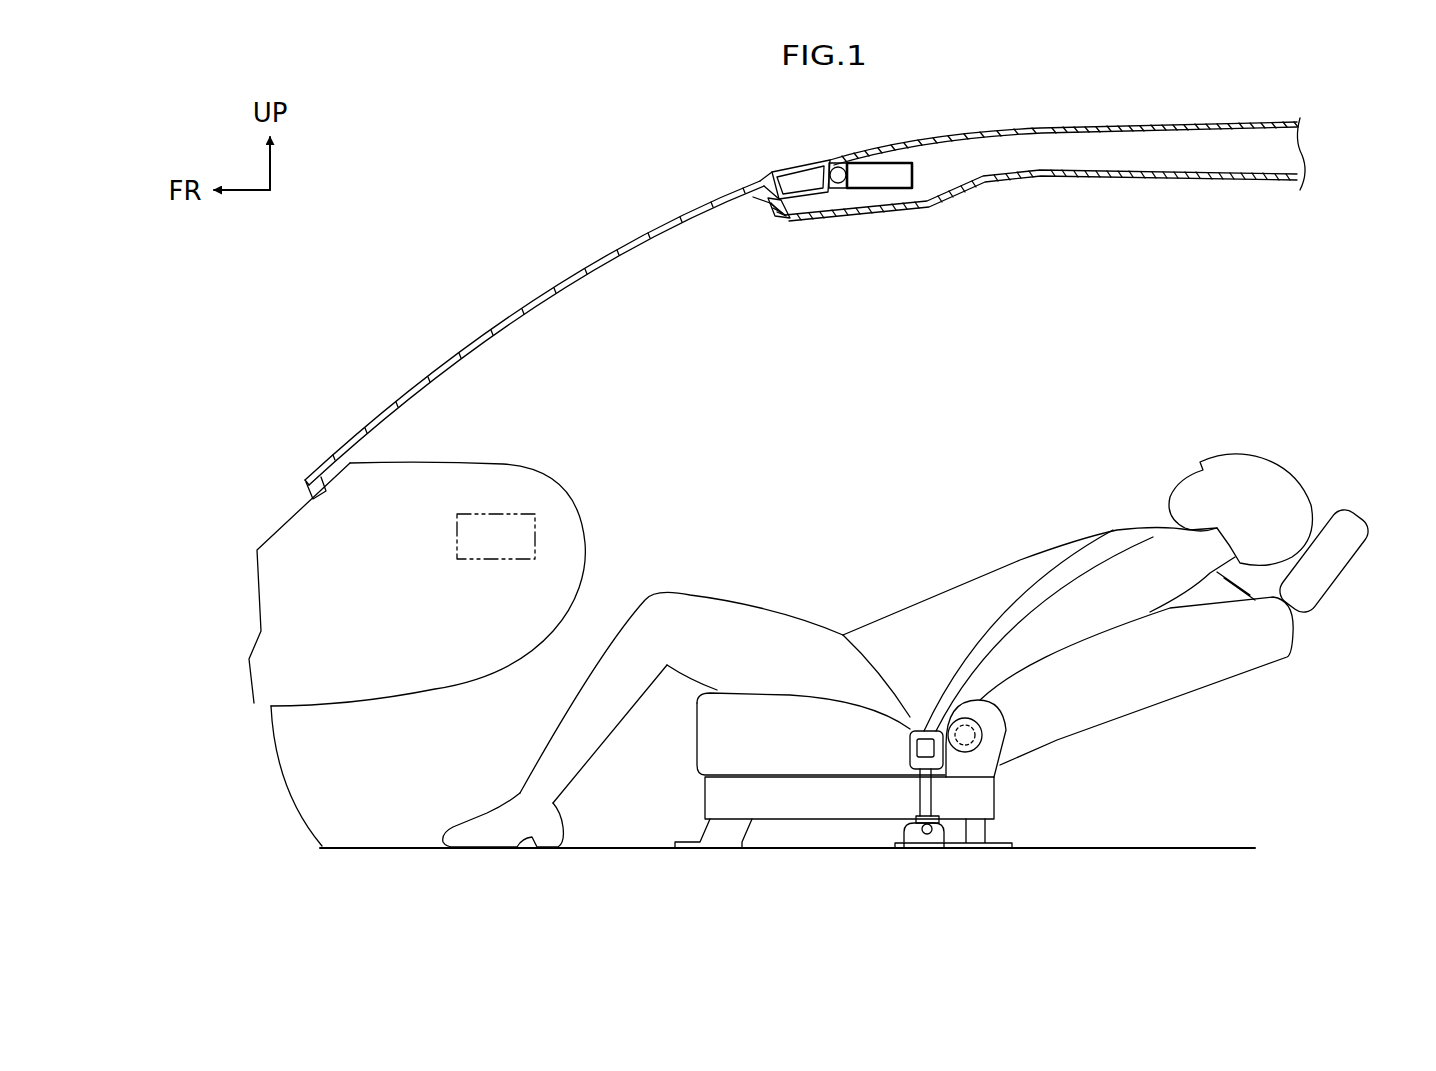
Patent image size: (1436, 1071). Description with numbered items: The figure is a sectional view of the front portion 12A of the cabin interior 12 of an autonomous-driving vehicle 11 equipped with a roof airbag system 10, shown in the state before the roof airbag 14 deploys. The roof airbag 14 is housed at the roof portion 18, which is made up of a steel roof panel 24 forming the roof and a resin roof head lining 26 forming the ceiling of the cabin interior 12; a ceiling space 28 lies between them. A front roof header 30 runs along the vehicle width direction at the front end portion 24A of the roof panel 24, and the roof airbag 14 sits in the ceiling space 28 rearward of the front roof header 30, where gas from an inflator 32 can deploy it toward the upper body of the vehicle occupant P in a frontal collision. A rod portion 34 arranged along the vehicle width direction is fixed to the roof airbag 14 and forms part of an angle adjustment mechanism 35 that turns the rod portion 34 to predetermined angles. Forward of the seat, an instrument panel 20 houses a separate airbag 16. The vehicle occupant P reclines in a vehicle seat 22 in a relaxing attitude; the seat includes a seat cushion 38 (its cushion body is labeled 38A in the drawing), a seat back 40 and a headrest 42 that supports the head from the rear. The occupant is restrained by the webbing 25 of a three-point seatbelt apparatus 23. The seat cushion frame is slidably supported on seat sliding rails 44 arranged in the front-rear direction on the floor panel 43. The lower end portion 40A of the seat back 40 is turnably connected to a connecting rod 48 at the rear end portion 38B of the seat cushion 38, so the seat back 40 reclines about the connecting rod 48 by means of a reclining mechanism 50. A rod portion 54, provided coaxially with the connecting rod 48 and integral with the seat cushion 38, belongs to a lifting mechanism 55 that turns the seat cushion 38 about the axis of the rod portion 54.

The roof airbag system 10 is at (989, 184).
The vehicle 11 is at (607, 215).
The cabin interior 12 is at (787, 659).
The front portion 12A is at (787, 659).
The roof airbag 14 is at (1029, 184).
The airbag 16 is at (500, 532).
The roof portion 18 is at (1029, 184).
The instrument panel 20 is at (450, 629).
The vehicle seat 22 is at (1003, 695).
The three-point seatbelt apparatus 23 is at (912, 727).
The roof panel 24 is at (1180, 125).
The front end portion 24A is at (806, 163).
The webbing 25 is at (990, 622).
The roof head lining 26 is at (1185, 180).
The ceiling space 28 is at (1103, 152).
The front roof header 30 is at (812, 211).
The inflator 32 is at (841, 184).
The rod portion 34 is at (880, 174).
The angle adjustment mechanism 35 is at (899, 189).
The seat cushion 38 is at (835, 790).
The seat cushion pad 38A is at (712, 742).
The rear end portion 38B is at (977, 780).
The seat back 40 is at (1119, 700).
The lower end portion 40A is at (1027, 735).
The headrest 42 is at (1340, 568).
The floor panel 43 is at (1157, 847).
The seat sliding rails 44 is at (848, 806).
The connecting rod 48 is at (1053, 698).
The reclining mechanism 50 is at (1023, 713).
The rod portion 54 is at (978, 733).
The lifting mechanism 55 is at (958, 766).
The vehicle occupant P is at (1101, 515).